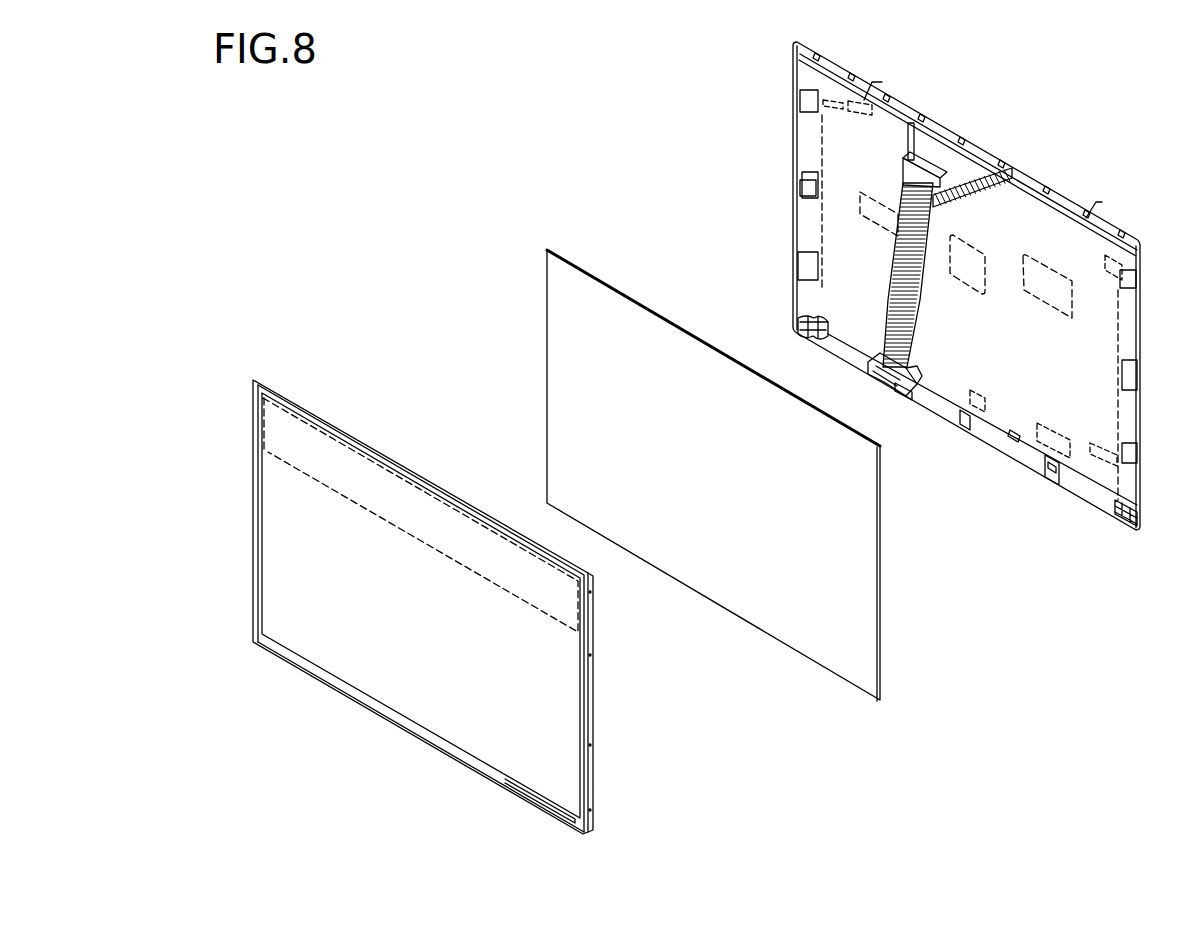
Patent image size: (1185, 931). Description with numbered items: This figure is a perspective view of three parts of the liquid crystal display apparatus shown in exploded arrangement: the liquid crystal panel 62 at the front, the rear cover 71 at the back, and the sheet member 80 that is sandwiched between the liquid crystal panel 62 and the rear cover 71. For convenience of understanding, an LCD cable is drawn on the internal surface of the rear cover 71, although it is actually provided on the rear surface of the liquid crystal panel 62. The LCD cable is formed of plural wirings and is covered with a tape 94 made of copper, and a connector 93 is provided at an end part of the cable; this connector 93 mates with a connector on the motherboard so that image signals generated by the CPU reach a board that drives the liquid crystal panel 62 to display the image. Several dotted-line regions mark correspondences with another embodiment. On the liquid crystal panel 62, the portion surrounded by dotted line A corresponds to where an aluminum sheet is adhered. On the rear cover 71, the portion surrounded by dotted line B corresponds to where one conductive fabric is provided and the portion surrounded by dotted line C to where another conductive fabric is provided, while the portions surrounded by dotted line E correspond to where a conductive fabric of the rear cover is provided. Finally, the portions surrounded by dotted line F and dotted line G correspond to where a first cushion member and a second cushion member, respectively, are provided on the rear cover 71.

The liquid crystal panel 62 is at (246, 393).
The sheet member 80 is at (532, 263).
The rear cover 71 is at (766, 66).
The tape 94 is at (890, 286).
The connector 93 is at (878, 374).
The dotted line A is at (276, 459).
The dotted line B is at (897, 394).
The dotted line C is at (922, 158).
The dotted line E is at (828, 98).
The dotted line F is at (874, 223).
The dotted line G is at (874, 112).